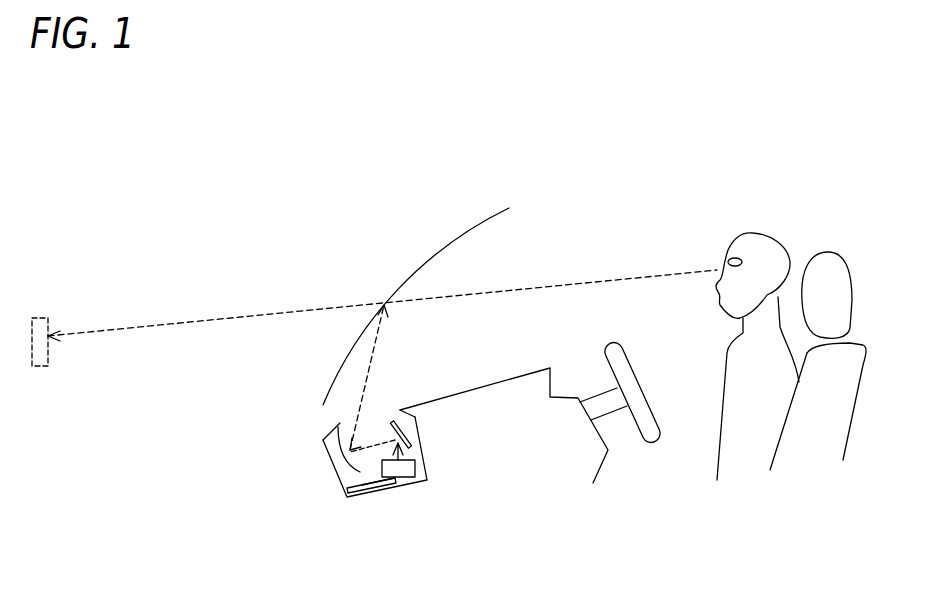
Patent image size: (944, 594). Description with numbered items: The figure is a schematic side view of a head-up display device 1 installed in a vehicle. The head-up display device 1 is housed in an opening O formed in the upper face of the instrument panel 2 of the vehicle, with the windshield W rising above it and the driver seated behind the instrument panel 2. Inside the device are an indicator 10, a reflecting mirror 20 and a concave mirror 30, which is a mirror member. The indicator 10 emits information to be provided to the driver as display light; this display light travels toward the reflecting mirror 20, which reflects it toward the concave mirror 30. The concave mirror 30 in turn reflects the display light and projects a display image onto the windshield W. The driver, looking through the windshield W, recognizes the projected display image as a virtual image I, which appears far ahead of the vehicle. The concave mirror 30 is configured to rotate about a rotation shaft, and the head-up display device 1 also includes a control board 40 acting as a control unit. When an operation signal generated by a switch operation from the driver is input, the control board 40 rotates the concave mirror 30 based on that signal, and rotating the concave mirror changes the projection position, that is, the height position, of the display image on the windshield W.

The head-up display device 1 is at (415, 495).
The indicator 10 is at (423, 480).
The reflecting mirror 20 is at (415, 425).
The concave mirror 30 is at (338, 472).
The control board 40 is at (338, 495).
The instrument panel 2 is at (532, 373).
The windshield W is at (466, 234).
The opening O is at (382, 405).
The virtual image I is at (40, 316).